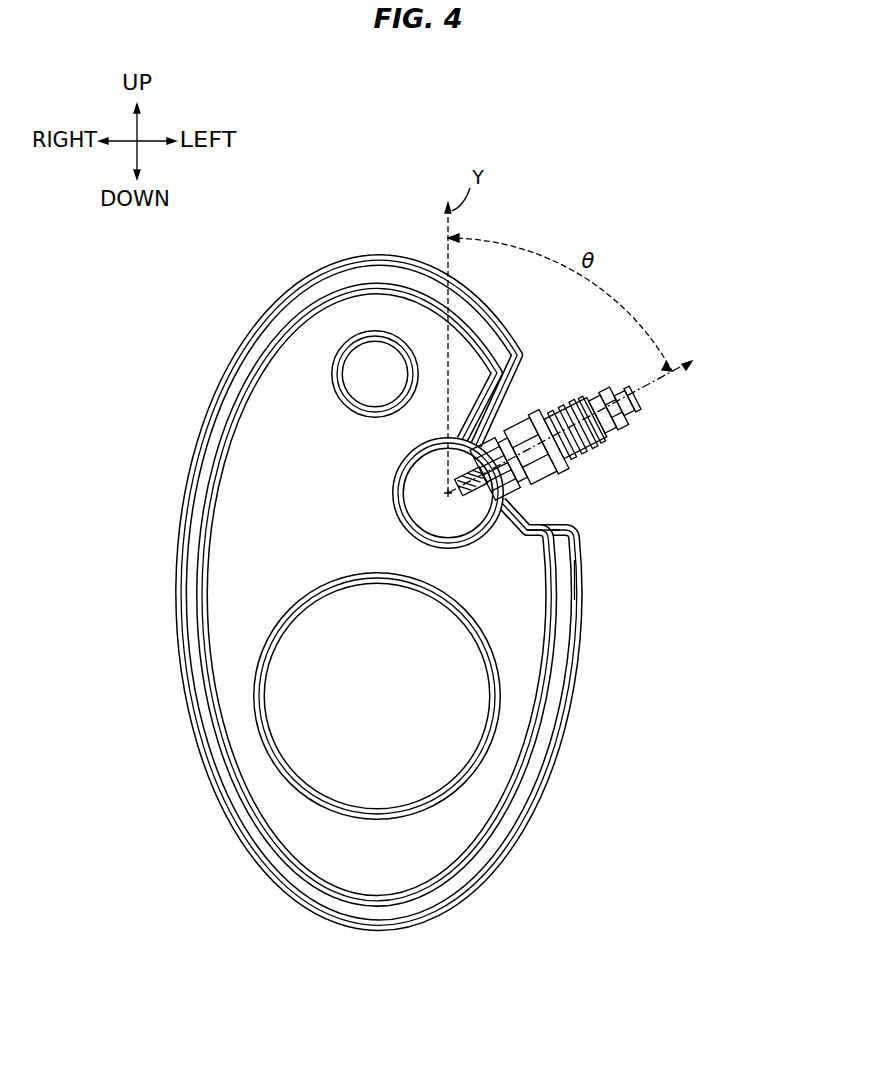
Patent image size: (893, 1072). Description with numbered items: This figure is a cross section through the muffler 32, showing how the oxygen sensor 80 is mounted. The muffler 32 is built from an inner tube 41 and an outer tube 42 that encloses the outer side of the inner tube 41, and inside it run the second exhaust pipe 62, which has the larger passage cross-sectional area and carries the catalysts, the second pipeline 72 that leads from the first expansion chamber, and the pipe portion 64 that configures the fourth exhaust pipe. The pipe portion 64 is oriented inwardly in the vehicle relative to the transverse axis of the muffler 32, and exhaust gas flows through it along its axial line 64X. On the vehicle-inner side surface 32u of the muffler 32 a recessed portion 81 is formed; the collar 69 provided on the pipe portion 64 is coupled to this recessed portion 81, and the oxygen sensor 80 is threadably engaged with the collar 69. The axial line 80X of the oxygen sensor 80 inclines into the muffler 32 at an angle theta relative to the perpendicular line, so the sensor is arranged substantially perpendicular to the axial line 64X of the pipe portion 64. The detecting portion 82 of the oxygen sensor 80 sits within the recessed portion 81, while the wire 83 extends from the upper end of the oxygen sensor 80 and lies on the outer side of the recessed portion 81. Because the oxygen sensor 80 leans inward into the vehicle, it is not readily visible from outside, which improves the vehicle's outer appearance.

The muffler 32 is at (417, 540).
The side surface of the muffler 32u is at (582, 563).
The inner tube 41 is at (543, 713).
The outer tube 42 is at (540, 775).
The second exhaust pipe 62 is at (333, 580).
The pipe portion 64 is at (392, 491).
The axial line of the pipe portion 64X is at (444, 496).
The collar 69 is at (495, 469).
The second pipeline 72 is at (337, 404).
The oxygen sensor 80 is at (547, 462).
The axial line of the oxygen sensor 80X is at (698, 364).
The recessed portion 81 is at (555, 520).
The detecting portion 82 is at (471, 481).
The wire 83 is at (627, 401).